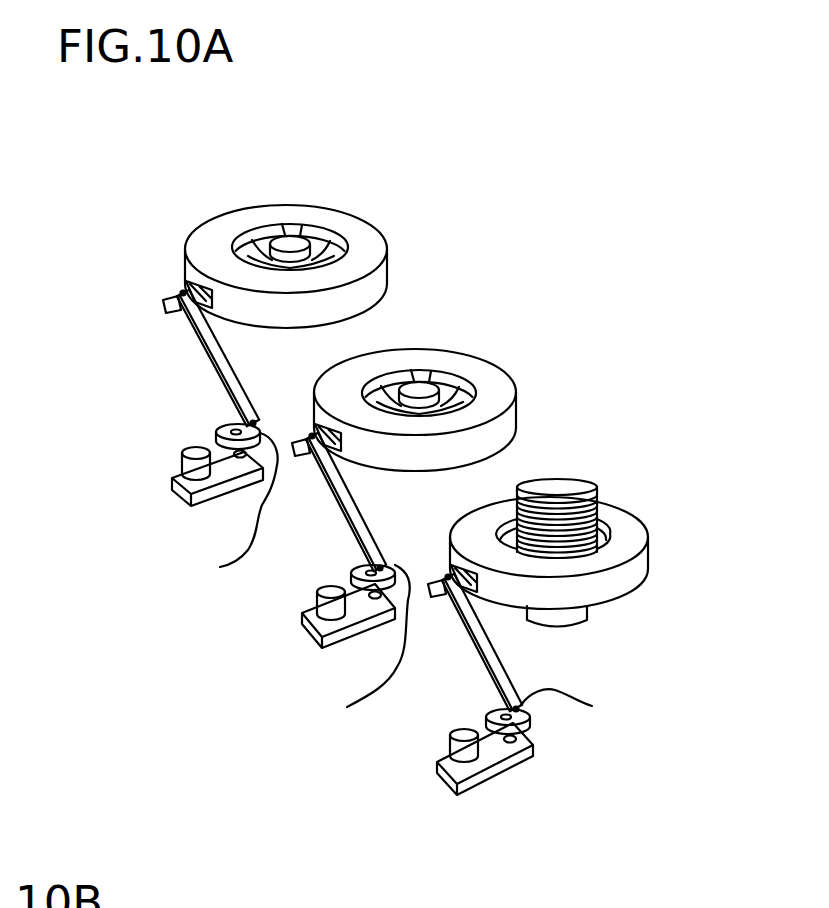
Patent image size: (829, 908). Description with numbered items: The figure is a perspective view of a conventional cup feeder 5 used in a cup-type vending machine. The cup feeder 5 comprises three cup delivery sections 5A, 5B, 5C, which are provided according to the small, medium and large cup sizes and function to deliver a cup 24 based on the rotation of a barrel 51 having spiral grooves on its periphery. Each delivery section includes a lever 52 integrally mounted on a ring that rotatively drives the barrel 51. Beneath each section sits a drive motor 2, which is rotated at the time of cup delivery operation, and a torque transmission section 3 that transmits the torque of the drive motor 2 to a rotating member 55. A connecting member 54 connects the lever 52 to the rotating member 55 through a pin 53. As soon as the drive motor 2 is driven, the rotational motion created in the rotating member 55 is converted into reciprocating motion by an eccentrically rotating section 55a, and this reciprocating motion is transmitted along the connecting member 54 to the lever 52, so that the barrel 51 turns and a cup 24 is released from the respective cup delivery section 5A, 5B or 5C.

The cup feeder 5 is at (566, 247).
The cup delivery section 5A is at (368, 238).
The cup delivery section 5B is at (497, 378).
The cup delivery section 5C is at (630, 520).
The barrel 51 is at (290, 240).
The lever 52 is at (172, 308).
The pin 53 is at (185, 292).
The connecting member 54 is at (205, 348).
The rotating member 55 is at (230, 428).
The eccentrically rotating section 55a is at (399, 582).
The drive motor 2 is at (190, 457).
The torque transmission section 3 is at (226, 488).
The cup 24 is at (573, 486).